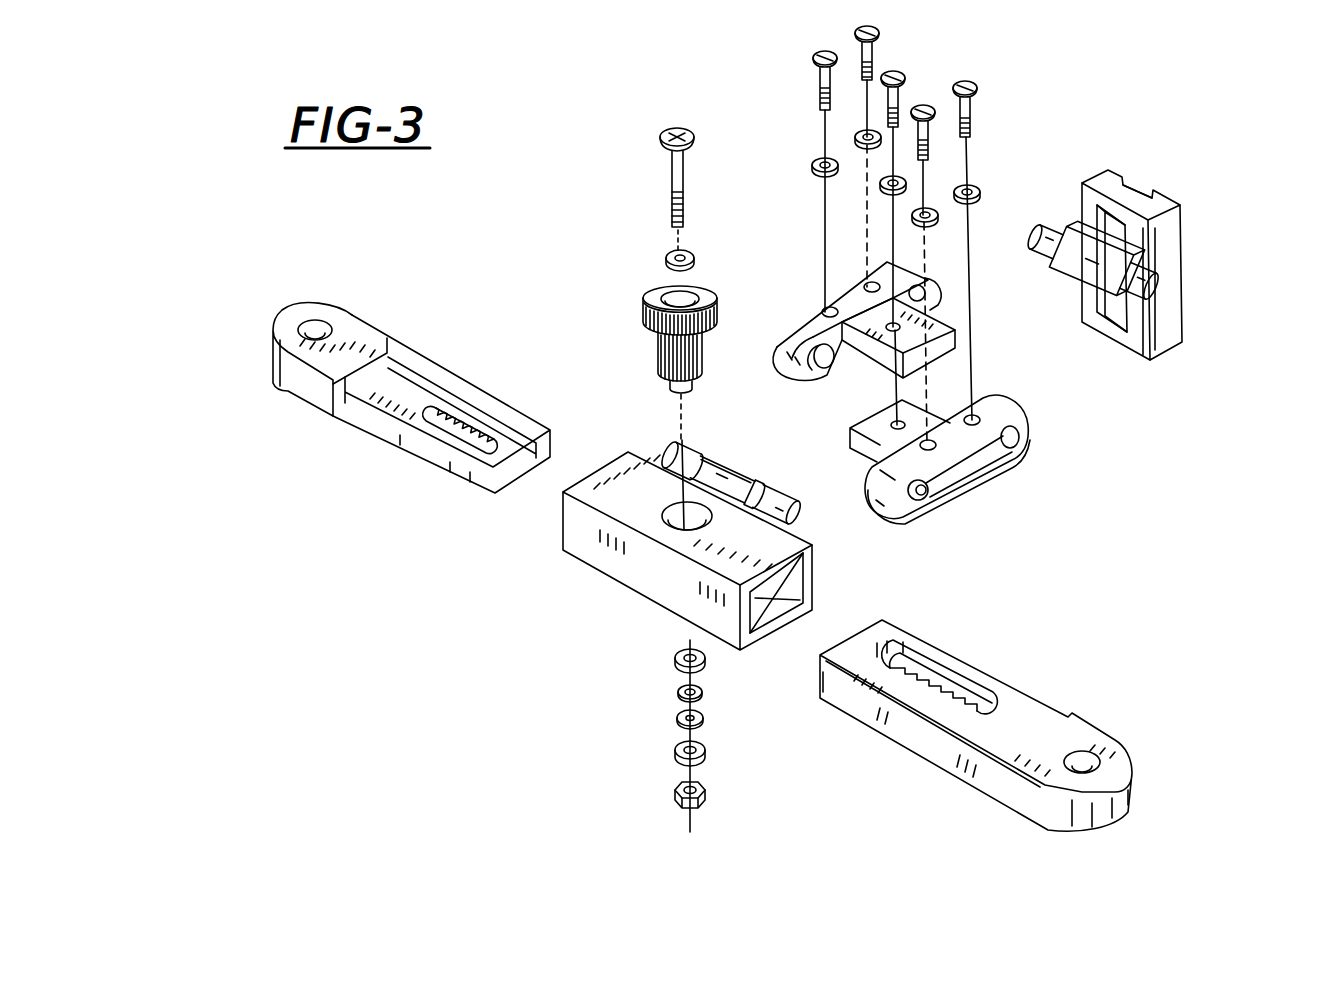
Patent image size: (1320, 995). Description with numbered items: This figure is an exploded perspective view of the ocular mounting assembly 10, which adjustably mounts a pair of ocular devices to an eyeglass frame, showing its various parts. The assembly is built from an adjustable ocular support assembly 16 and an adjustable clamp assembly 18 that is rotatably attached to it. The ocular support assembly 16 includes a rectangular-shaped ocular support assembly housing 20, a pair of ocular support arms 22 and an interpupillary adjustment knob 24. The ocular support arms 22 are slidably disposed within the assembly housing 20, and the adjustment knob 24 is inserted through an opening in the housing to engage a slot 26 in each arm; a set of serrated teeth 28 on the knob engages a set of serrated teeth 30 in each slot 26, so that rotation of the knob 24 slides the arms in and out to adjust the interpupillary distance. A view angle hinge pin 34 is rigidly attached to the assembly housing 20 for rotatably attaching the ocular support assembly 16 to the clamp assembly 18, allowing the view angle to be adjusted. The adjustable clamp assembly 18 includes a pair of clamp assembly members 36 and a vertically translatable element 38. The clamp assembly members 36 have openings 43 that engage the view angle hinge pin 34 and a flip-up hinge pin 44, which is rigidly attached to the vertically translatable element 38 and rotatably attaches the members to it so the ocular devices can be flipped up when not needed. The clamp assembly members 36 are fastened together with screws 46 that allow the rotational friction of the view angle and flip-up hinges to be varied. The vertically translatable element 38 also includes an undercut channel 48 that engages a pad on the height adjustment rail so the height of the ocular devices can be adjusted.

The ocular mounting assembly 10 is at (588, 673).
The adjustable ocular support assembly 16 is at (618, 443).
The adjustable clamp assembly 18 is at (1128, 364).
The ocular support assembly housing 20 is at (607, 577).
The ocular support arms 22 is at (300, 396).
The interpupillary adjustment knob 24 is at (718, 302).
The slot 26 is at (421, 416).
The serrated teeth 28 is at (697, 357).
The serrated teeth 30 is at (467, 437).
The view angle hinge pin 34 is at (806, 518).
The clamp assembly members 36 is at (945, 356).
The vertically translatable element 38 is at (1180, 260).
The openings 43 is at (920, 293).
The flip-up hinge pin 44 is at (1043, 225).
The screws 46 is at (856, 34).
The undercut channel 48 is at (1130, 180).